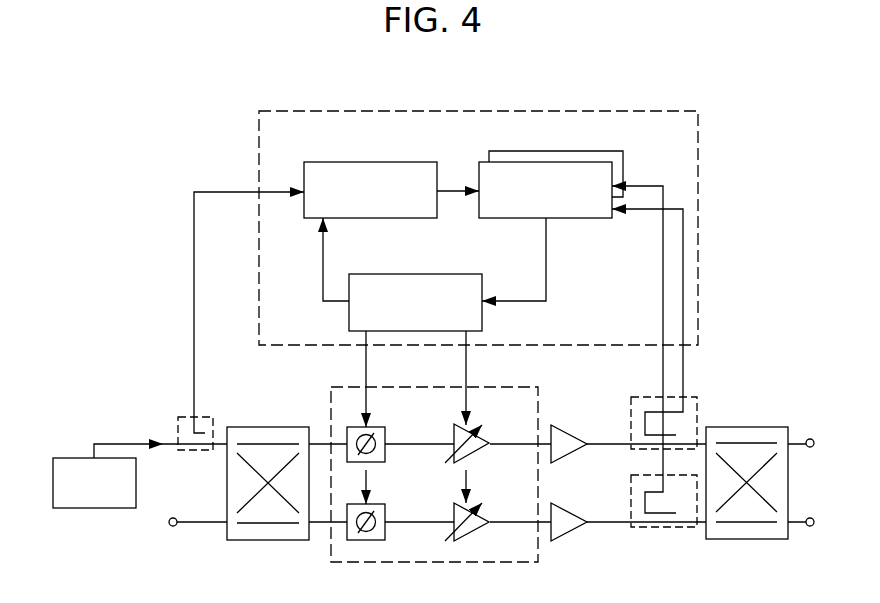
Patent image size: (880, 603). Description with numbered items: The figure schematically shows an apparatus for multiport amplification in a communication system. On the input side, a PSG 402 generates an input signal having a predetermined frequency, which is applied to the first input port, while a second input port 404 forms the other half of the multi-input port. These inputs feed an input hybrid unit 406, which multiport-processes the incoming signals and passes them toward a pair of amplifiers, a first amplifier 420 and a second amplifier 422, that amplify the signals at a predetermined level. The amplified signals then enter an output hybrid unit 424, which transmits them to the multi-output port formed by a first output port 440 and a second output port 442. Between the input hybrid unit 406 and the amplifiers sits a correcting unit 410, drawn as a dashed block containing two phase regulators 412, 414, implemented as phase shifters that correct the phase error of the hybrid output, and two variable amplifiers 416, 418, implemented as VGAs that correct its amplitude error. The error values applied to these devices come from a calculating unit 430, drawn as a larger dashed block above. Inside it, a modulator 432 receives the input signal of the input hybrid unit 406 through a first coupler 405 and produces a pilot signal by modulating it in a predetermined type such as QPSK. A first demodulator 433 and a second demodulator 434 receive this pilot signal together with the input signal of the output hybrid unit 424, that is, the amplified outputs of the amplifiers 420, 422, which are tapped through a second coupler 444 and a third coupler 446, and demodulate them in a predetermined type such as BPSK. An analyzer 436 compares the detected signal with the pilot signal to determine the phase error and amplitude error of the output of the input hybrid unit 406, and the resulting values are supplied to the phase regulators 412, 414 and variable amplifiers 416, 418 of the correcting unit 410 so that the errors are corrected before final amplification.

The PSG 402 is at (94, 508).
The input port 2 404 is at (173, 526).
The coupler 1 405 is at (200, 417).
The input hybrid unit 406 is at (258, 427).
The correcting unit 410 is at (502, 387).
The phase regulator 412 is at (382, 427).
The phase regulator 414 is at (382, 504).
The variable amplifier 416 is at (487, 432).
The variable amplifier 418 is at (487, 510).
The amplifier 1 420 is at (567, 425).
The amplifier 2 422 is at (567, 503).
The output hybrid unit 424 is at (737, 427).
The calculating unit 430 is at (648, 89).
The modulator 432 is at (385, 162).
The demodulator 1 433 is at (573, 151).
The demodulator 2 434 is at (560, 218).
The analyzer 436 is at (440, 274).
The output port 1 440 is at (814, 443).
The output port 2 442 is at (814, 522).
The coupler 2 444 is at (658, 396).
The coupler 3 446 is at (658, 527).